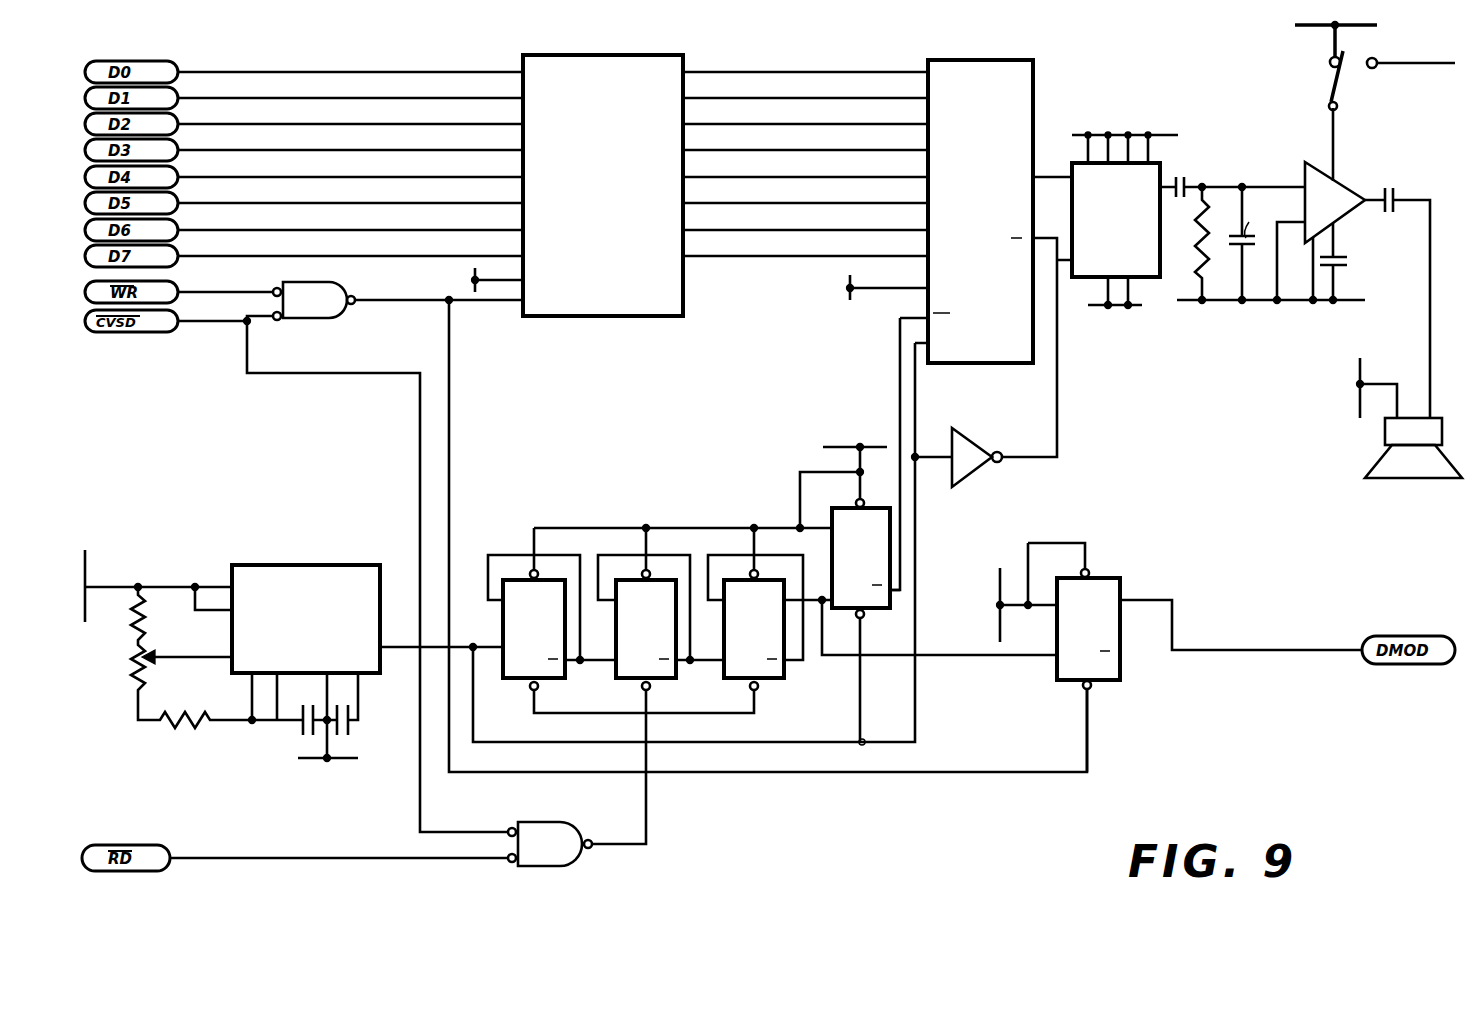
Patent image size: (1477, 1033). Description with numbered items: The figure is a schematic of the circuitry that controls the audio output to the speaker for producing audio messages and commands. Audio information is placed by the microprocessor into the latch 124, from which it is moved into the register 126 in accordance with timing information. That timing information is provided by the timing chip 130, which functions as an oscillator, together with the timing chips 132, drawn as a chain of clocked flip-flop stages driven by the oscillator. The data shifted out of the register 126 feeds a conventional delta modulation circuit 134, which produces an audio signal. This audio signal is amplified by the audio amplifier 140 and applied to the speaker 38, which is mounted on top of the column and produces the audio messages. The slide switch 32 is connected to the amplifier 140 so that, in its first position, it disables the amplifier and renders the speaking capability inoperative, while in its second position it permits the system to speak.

The latch 124 is at (632, 65).
The register 126 is at (1030, 45).
The timing chip 130 is at (340, 567).
The timing chips 132 is at (748, 774).
The delta modulation circuit 134 is at (1158, 263).
The audio amplifier 140 is at (1370, 206).
The slide switch 32 is at (1330, 84).
The speaker 38 is at (1392, 435).